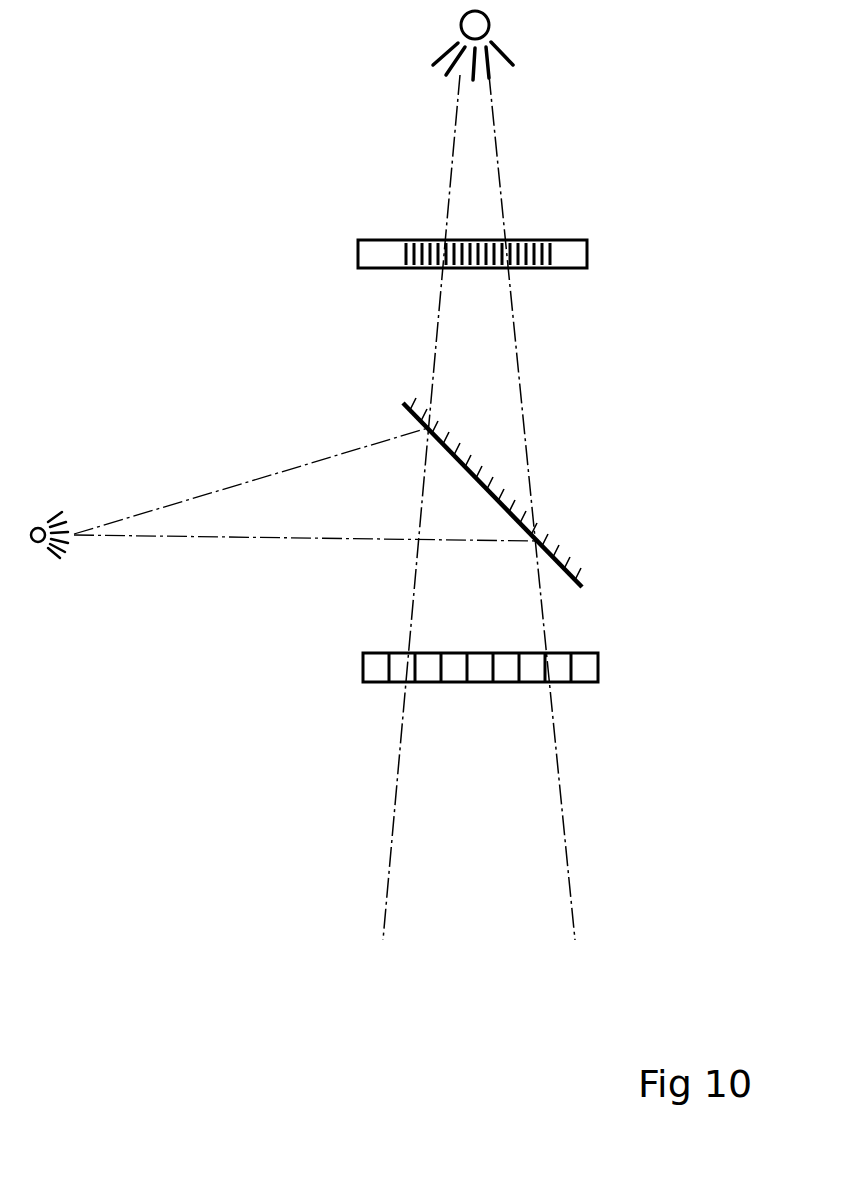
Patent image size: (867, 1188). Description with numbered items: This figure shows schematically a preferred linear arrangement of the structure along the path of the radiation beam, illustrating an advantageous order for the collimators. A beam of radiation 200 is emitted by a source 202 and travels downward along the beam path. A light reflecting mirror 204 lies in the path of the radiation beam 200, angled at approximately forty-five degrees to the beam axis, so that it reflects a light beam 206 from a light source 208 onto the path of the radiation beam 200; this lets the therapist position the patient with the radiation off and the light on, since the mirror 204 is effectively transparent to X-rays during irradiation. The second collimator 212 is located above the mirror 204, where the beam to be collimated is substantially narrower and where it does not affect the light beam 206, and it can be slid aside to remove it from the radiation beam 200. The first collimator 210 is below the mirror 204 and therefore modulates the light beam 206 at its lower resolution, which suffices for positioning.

The beam of radiation 200 is at (498, 173).
The source 202 is at (482, 23).
The light reflecting mirror 204 is at (553, 545).
The light beam 206 is at (270, 474).
The light source 208 is at (40, 545).
The first collimator 210 is at (594, 670).
The second collimator 212 is at (568, 261).